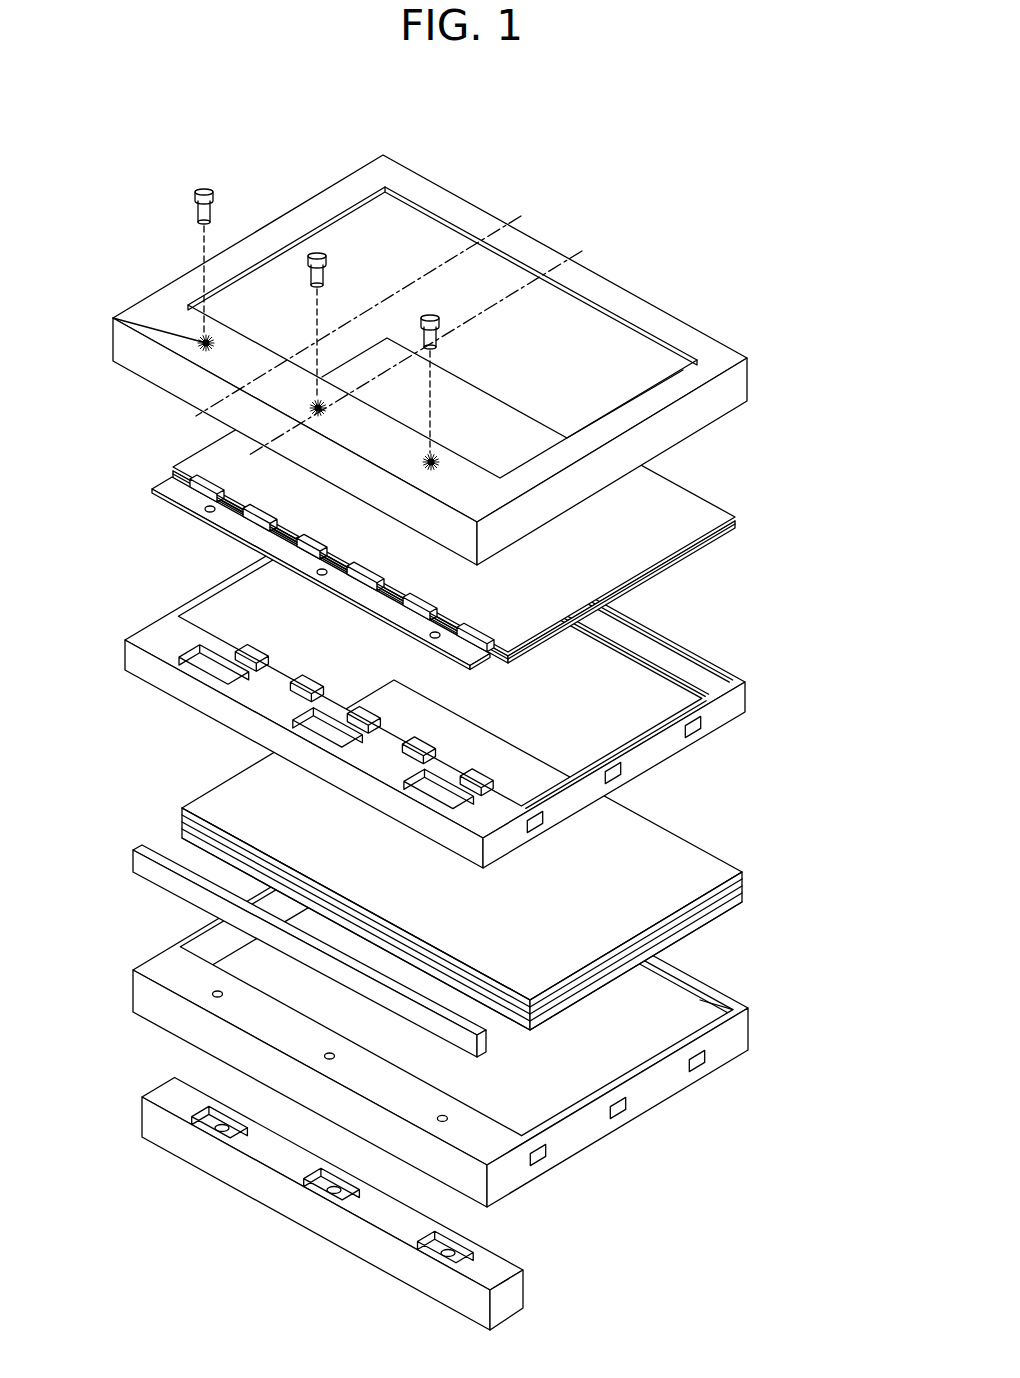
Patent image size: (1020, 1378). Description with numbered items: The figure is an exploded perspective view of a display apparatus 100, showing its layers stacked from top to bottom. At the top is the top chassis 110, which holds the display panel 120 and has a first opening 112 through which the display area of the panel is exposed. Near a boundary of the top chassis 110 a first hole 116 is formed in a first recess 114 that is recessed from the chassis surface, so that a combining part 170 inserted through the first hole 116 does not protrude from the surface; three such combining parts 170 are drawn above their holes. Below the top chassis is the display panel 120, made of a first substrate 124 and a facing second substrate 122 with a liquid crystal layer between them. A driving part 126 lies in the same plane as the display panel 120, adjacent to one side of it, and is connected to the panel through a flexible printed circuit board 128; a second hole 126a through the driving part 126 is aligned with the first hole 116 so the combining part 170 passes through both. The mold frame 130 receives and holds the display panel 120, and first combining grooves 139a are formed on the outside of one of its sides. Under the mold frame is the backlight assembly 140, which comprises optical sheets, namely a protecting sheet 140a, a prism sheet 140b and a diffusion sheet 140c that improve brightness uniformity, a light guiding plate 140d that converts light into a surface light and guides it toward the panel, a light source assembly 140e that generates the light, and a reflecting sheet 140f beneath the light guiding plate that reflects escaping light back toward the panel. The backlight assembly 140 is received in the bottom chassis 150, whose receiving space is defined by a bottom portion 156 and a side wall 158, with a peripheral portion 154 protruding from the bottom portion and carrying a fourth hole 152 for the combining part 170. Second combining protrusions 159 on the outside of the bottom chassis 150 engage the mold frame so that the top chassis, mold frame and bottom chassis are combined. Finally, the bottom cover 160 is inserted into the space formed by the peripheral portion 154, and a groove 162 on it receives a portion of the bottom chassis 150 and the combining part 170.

The display apparatus 100 is at (442, 718).
The top chassis 110 is at (451, 360).
The first opening 112 is at (575, 366).
The first recess 114 is at (202, 338).
The first hole 116 is at (200, 340).
The display panel 120 is at (498, 497).
The second substrate 122 is at (736, 512).
The first substrate 124 is at (736, 524).
The driving part 126 is at (283, 572).
The second hole 126a is at (205, 509).
The flexible printed circuit board 128 is at (252, 512).
The mold frame 130 is at (476, 676).
The first combining groove 139a is at (700, 730).
The backlight assembly 140 is at (448, 855).
The protecting sheet 140a is at (182, 808).
The prism sheet 140b is at (182, 815).
The diffusion sheet 140c is at (182, 822).
The light guiding plate 140d is at (744, 888).
The light source assembly 140e is at (133, 852).
The reflecting sheet 140f is at (744, 898).
The bottom chassis 150 is at (456, 1010).
The fourth hole 152 is at (215, 994).
The peripheral portion 154 is at (165, 970).
The bottom portion 156 is at (595, 1058).
The side wall 158 is at (703, 1006).
The second combining protrusion 159 is at (702, 1060).
The bottom cover 160 is at (378, 1204).
The groove 162 is at (420, 1237).
The combining part 170 is at (194, 205).